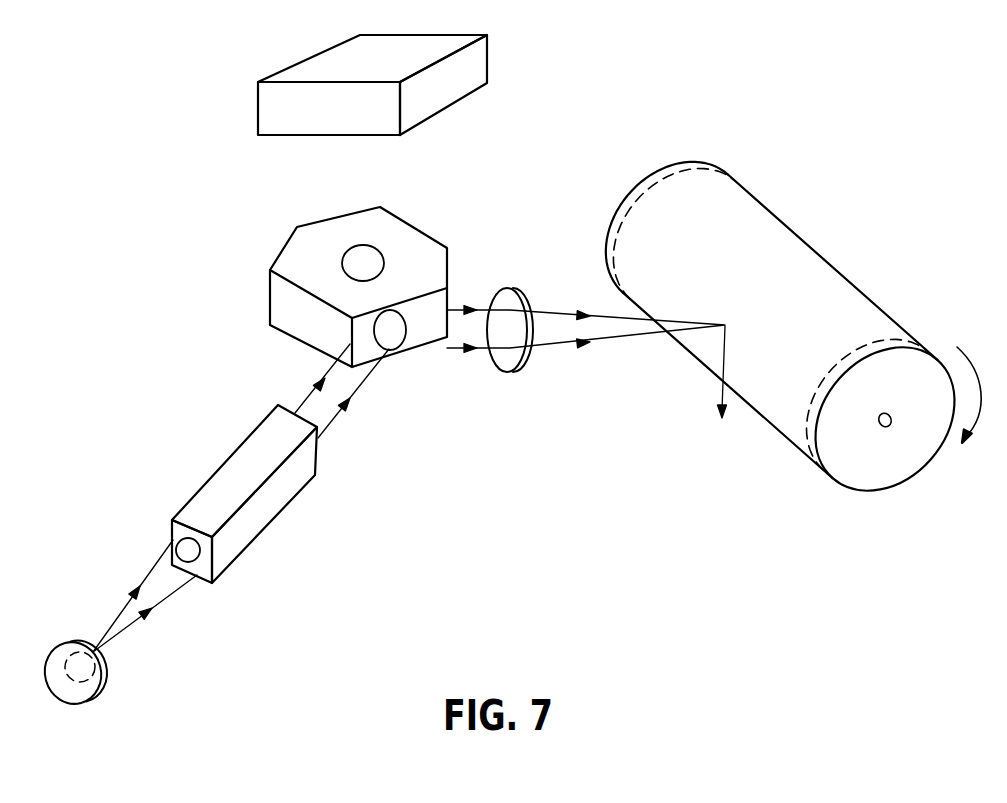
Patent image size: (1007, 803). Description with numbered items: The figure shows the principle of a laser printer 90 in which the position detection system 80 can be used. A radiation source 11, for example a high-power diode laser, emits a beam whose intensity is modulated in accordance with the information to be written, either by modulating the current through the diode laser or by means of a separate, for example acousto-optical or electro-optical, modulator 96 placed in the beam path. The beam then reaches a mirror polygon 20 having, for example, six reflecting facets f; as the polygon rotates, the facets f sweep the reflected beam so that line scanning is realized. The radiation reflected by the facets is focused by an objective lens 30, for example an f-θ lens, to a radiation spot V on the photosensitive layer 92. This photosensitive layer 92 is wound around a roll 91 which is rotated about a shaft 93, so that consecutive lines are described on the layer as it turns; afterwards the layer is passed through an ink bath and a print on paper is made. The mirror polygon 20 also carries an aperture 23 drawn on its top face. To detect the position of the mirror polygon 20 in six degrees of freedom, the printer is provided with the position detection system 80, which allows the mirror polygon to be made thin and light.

The position detection system 80 is at (477, 69).
The mirror polygon 20 is at (229, 230).
The aperture on prism 23 is at (343, 264).
The reflecting facets f is at (372, 330).
The objective lens 30 is at (510, 362).
The laser printer 90 is at (953, 124).
The photosensitive layer 92 is at (775, 233).
The roll 91 is at (842, 472).
The shaft 93 is at (883, 427).
The radiation spot V is at (723, 387).
The modulator 96 is at (273, 495).
The radiation source 11 is at (95, 692).